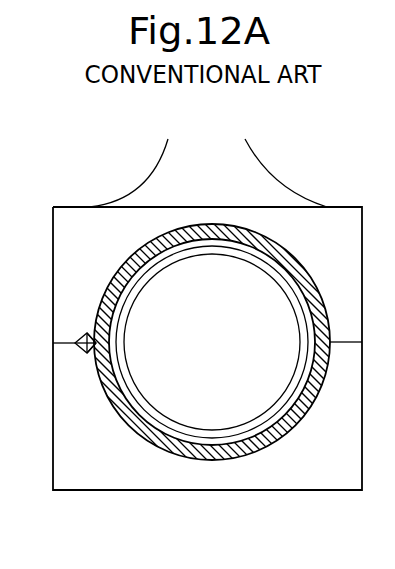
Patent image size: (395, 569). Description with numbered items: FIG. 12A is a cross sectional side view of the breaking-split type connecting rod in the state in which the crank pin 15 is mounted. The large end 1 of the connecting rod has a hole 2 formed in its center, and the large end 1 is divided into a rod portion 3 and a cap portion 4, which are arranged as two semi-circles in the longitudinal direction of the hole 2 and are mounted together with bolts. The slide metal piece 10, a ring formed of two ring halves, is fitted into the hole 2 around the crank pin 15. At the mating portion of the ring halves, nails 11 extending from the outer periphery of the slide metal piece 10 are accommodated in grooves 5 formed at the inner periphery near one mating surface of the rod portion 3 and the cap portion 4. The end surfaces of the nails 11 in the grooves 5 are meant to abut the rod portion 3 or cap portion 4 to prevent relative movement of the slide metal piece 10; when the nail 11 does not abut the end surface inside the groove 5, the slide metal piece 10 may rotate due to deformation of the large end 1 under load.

The large end 1 is at (270, 164).
The hole 2 is at (119, 372).
The rod portion 3 is at (323, 218).
The cap portion 4 is at (320, 475).
The grooves 5 is at (74, 345).
The slide metal piece 10 is at (210, 224).
The nails 11 is at (80, 342).
The crank pin 15 is at (222, 351).